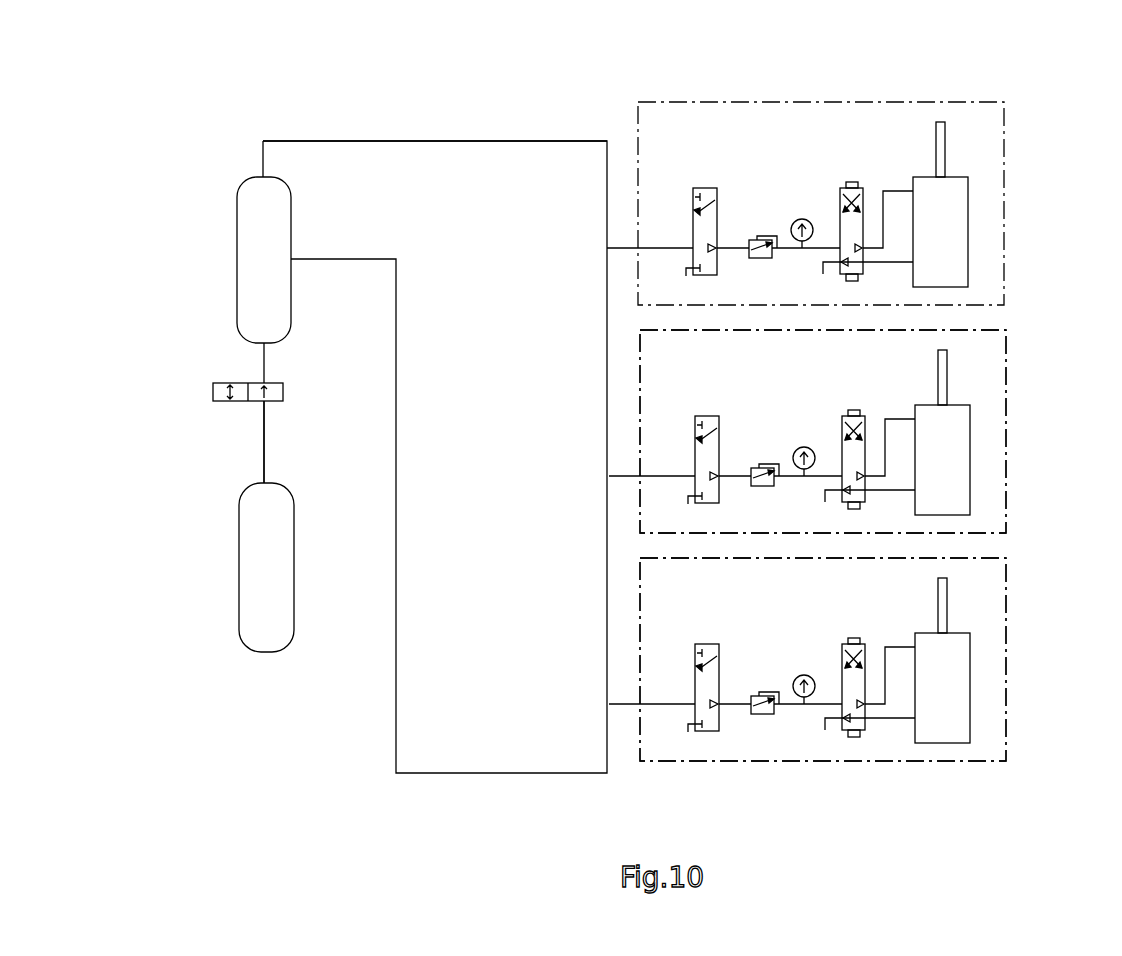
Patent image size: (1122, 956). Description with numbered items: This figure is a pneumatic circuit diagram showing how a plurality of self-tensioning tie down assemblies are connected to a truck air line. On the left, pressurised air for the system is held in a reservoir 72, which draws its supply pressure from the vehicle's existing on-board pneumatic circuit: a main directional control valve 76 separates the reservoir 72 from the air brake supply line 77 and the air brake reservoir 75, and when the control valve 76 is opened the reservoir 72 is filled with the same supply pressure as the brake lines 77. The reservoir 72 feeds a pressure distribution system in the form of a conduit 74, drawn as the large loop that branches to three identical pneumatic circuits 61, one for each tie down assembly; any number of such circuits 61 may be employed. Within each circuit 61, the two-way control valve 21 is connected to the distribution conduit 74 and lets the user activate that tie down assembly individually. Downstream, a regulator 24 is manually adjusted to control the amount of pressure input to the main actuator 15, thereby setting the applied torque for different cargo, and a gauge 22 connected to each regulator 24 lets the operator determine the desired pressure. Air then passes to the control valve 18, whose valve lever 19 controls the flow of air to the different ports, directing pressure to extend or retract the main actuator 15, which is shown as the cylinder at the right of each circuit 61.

The main actuator 15 is at (953, 177).
The control valve 18 is at (853, 180).
The valve lever 19 is at (846, 182).
The two-way control valve 21 is at (706, 188).
The gauge 22 is at (801, 218).
The regulator 24 is at (754, 238).
The pneumatic circuit 61 is at (1023, 207).
The reservoir 72 is at (236, 231).
The conduit 74 is at (357, 141).
The air brake reservoir 75 is at (239, 530).
The main directional control valve 76 is at (213, 391).
The air brake supply line 77 is at (263, 436).